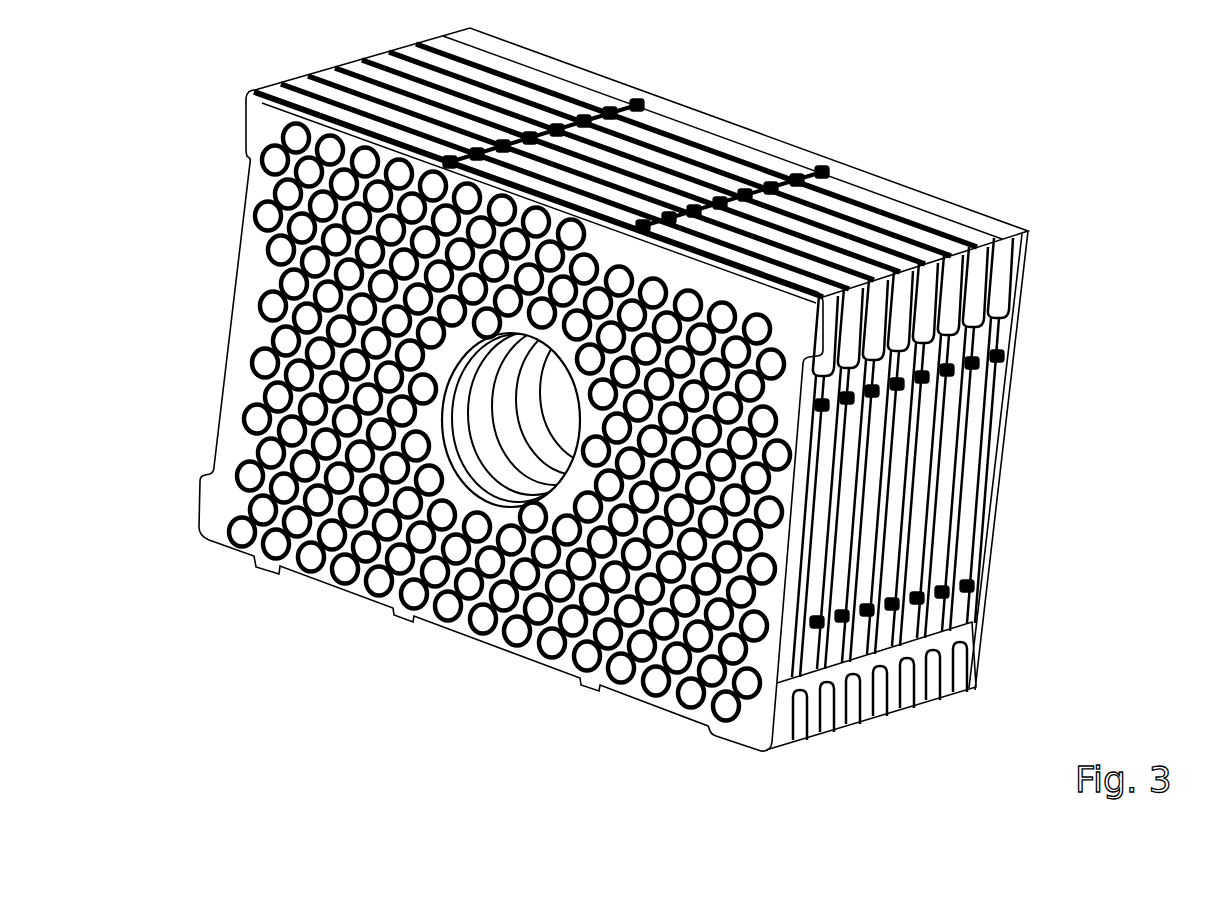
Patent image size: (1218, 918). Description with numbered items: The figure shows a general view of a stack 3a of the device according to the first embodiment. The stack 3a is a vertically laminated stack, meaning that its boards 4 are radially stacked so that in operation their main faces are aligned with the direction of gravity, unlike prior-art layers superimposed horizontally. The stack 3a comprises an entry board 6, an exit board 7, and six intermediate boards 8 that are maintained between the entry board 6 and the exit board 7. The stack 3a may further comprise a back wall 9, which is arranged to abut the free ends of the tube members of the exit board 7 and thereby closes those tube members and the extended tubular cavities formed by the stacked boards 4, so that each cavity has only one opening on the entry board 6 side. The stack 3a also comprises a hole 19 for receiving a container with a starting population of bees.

The stack 3a is at (1100, 270).
The boards 4 is at (960, 662).
The entry board 6 is at (690, 713).
The exit board 7 is at (953, 610).
The intermediate boards 8 is at (957, 560).
The back wall 9 is at (1040, 238).
The hole 19 is at (537, 402).